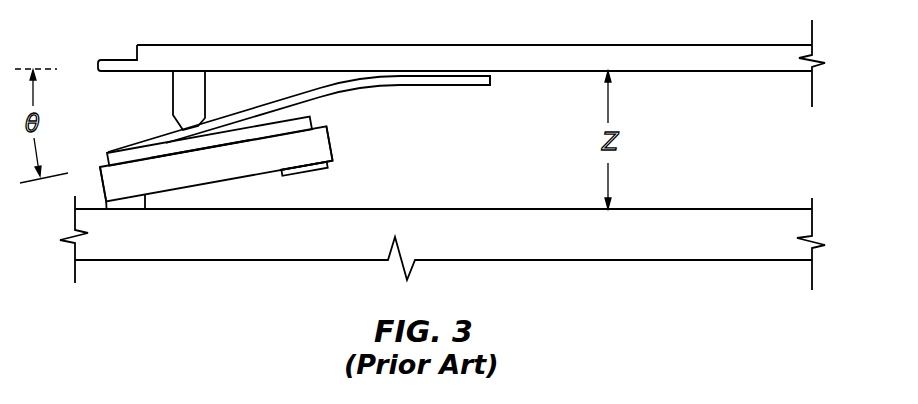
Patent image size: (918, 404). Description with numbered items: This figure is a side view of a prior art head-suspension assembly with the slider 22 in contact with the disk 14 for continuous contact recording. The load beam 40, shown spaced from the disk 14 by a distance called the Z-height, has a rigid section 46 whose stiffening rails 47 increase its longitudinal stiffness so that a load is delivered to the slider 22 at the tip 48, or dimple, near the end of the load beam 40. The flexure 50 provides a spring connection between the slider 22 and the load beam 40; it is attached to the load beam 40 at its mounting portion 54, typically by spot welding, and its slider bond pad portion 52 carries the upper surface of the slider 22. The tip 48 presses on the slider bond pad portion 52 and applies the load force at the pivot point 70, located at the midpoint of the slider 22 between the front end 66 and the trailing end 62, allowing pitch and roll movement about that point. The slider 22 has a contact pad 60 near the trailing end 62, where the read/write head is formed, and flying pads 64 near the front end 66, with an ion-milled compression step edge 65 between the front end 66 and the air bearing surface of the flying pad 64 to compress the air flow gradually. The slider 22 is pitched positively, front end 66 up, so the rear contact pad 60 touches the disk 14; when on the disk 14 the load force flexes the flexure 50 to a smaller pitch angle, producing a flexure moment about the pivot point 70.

The disk 14 is at (728, 223).
The slider 22 is at (335, 133).
The load beam 40 is at (712, 71).
The rigid section 46 is at (127, 58).
The stiffening rails 47 is at (307, 44).
The tip 48 is at (182, 107).
The flexure 50 is at (267, 102).
The slider bond pad portion 52 is at (310, 117).
The mounting portion 54 is at (434, 82).
The contact pad 60 is at (146, 210).
The trailing end 62 is at (101, 177).
The flying pads 64 is at (286, 176).
The compression step edge 65 is at (334, 161).
The front end 66 is at (338, 153).
The pivot point 70 is at (190, 152).